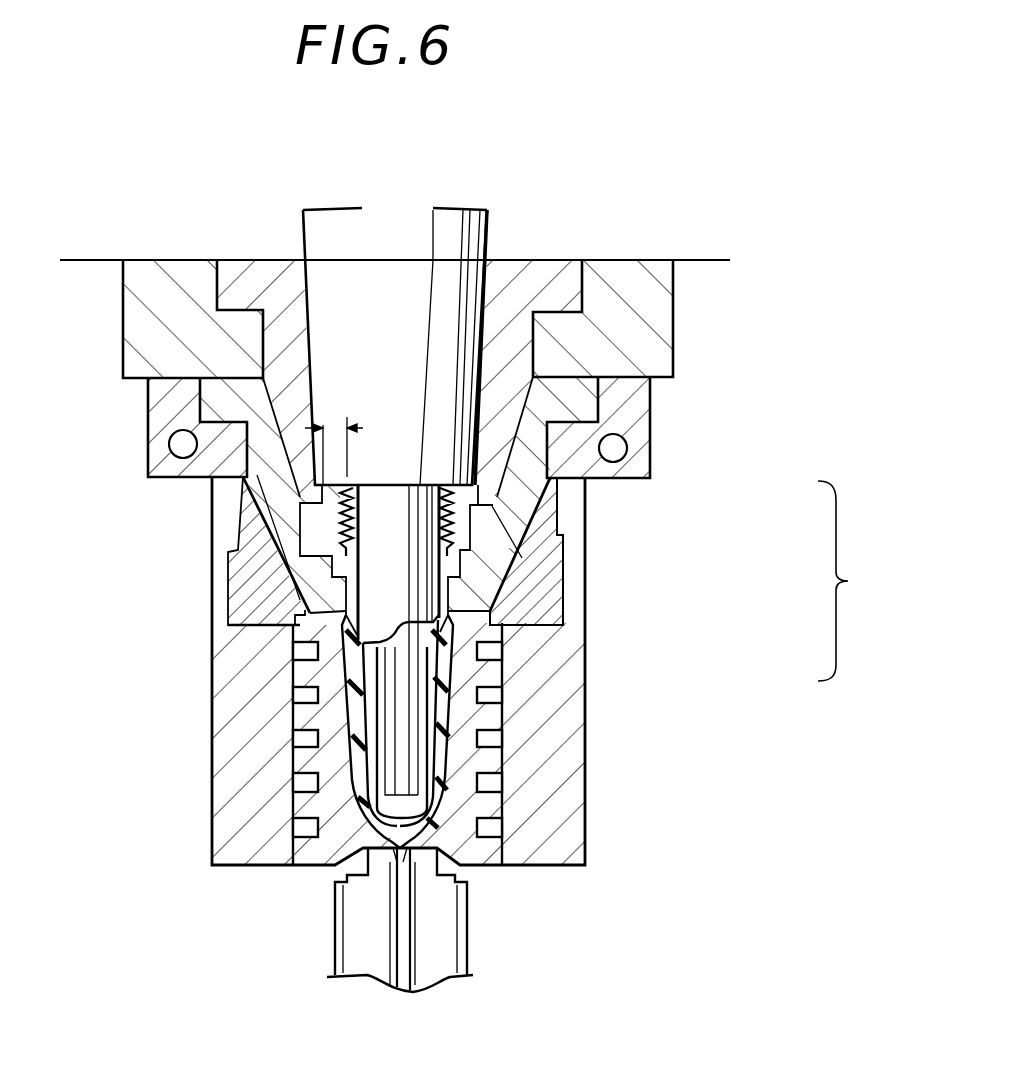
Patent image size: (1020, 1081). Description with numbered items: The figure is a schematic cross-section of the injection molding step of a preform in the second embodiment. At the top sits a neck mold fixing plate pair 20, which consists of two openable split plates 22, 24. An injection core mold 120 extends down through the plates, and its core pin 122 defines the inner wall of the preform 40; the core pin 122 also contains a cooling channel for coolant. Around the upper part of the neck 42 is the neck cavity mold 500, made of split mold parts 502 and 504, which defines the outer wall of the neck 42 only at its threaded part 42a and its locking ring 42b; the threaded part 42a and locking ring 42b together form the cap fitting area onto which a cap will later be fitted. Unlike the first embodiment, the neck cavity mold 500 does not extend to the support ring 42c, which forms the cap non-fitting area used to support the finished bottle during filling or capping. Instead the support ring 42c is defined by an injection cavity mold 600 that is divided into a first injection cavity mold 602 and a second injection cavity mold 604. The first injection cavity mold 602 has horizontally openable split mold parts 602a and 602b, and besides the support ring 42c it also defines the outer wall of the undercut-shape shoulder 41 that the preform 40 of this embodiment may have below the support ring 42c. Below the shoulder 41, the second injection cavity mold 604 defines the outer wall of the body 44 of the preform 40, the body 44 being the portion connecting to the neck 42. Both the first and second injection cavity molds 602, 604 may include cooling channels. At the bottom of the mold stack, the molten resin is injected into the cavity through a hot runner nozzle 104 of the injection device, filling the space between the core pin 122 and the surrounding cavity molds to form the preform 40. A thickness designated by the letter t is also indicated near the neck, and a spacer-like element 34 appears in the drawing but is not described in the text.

The neck mold fixing plate pair 20 is at (684, 283).
The split plate 22 is at (647, 305).
The split plate 24 is at (158, 308).
The spacer 34 is at (275, 490).
The preform 40 is at (458, 762).
The undercut-shape shoulder 41 is at (537, 585).
The neck 42 is at (575, 471).
The threaded part 42a is at (252, 520).
The locking ring 42b is at (250, 627).
The support ring 42c is at (560, 557).
The body 44 is at (450, 840).
The hot runner nozzle 104 is at (438, 940).
The injection core mold 120 is at (467, 245).
The core pin 122 is at (430, 717).
The neck cavity mold 500 is at (520, 352).
The split mold part 502 is at (510, 410).
The split mold part 504 is at (257, 437).
The injection cavity mold 600 is at (865, 581).
The first injection cavity mold 602 is at (494, 518).
The split mold part 602a is at (462, 495).
The split mold part 602b is at (236, 585).
The second injection cavity mold 604 is at (493, 712).